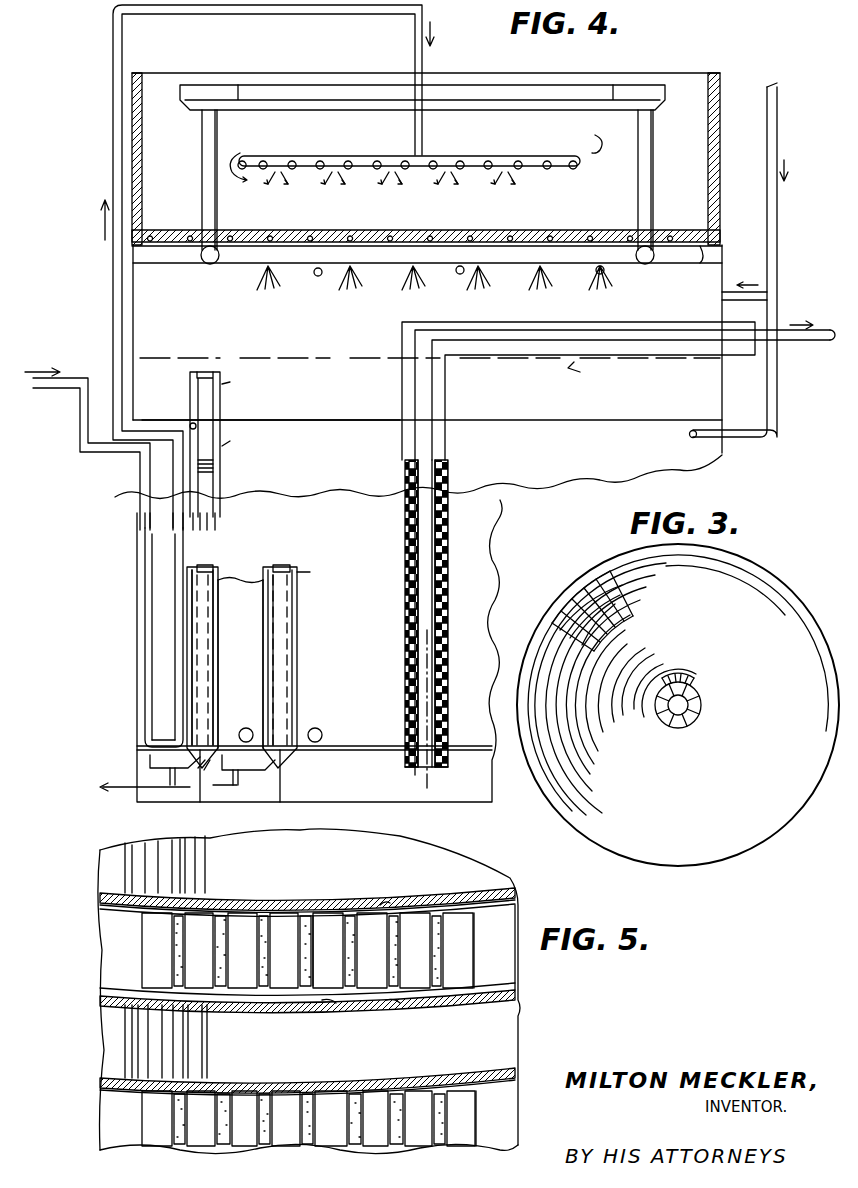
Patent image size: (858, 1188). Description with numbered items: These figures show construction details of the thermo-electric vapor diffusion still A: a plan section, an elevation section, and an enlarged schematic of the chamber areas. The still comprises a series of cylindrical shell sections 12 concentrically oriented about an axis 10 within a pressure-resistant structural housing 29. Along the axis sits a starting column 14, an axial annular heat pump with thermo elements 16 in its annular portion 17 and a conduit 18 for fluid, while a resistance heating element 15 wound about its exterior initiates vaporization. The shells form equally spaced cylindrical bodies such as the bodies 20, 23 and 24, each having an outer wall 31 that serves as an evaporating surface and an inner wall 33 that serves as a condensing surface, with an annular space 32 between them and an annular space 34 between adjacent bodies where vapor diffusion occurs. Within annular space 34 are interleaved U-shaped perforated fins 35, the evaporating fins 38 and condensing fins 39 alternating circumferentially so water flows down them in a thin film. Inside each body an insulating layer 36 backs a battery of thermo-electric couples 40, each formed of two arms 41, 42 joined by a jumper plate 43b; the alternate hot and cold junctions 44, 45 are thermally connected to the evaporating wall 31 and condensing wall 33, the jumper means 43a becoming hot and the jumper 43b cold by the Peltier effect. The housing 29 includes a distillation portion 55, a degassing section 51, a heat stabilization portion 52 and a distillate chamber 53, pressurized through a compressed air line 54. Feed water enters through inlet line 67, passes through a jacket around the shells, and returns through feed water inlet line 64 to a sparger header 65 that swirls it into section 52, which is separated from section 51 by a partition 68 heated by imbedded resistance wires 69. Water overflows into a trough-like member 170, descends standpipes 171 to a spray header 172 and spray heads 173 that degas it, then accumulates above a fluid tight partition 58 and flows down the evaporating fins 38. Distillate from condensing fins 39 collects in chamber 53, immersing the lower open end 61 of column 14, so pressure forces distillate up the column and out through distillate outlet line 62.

In FIG. 4, the axis 10 is at (430, 784).
In FIG. 3, the axis 10 is at (672, 727).
In FIG. 4, the cylindrical shell sections 12 is at (226, 455).
In FIG. 5, the cylindrical shell sections 12 is at (526, 970).
In FIG. 4, the starting column 14 is at (458, 669).
In FIG. 3, the starting column 14 is at (714, 705).
In FIG. 4, the resistance heating element 15 is at (442, 552).
In FIG. 4, the thermo elements 16 is at (448, 599).
In FIG. 4, the annular portion 17 is at (440, 722).
In FIG. 4, the conduit 18 is at (430, 695).
In FIG. 3, the cylindrical body 20 is at (686, 675).
In FIG. 3, the cylindrical body 23 is at (618, 605).
In FIG. 3, the cylindrical body 24 is at (612, 562).
In FIG. 4, the structural housing 29 is at (137, 718).
In FIG. 4, the outer wall 31 is at (218, 672).
In FIG. 5, the outer wall 31 is at (518, 1010).
In FIG. 3, the annular space 32 is at (697, 567).
In FIG. 5, the annular space 32 is at (330, 957).
In FIG. 4, the inner wall 33 is at (265, 710).
In FIG. 5, the inner wall 33 is at (520, 898).
In FIG. 3, the annular space 34 is at (745, 571).
In FIG. 5, the annular space 34 is at (312, 1073).
In FIG. 4, the interleaved fins 35 is at (280, 648).
In FIG. 5, the interleaved fins 35 is at (216, 865).
In FIG. 5, the insulating layer 36 is at (512, 918).
In FIG. 4, the evaporating fins 38 is at (215, 692).
In FIG. 4, the condensing fins 39 is at (192, 622).
In FIG. 5, the thermo-electric couples 40 is at (464, 967).
In FIG. 5, the arm 41 is at (414, 979).
In FIG. 5, the arm 42 is at (352, 968).
In FIG. 5, the jumper means 43a is at (327, 1000).
In FIG. 5, the jumper plate 43b is at (385, 903).
In FIG. 5, the hot thermocouple junction 44 is at (393, 1000).
In FIG. 5, the cold thermocouple junction 45 is at (400, 905).
In FIG. 4, the degassing section 51 is at (325, 406).
In FIG. 4, the heat stabilization portion 52 is at (170, 170).
In FIG. 4, the distillate chamber 53 is at (360, 784).
In FIG. 4, the compressed air line 54 is at (778, 412).
In FIG. 4, the distillation portion 55 is at (327, 476).
In FIG. 4, the fluid tight partition 58 is at (560, 416).
In FIG. 4, the lower open end 61 is at (412, 772).
In FIG. 4, the distillate outlet line 62 is at (822, 325).
In FIG. 4, the feed water inlet line 64 is at (112, 96).
In FIG. 4, the sparger header 65 is at (546, 152).
In FIG. 4, the inlet line 67 is at (72, 380).
In FIG. 4, the partition 68 is at (705, 256).
In FIG. 4, the electrical resistance wires 69 is at (660, 250).
In FIG. 4, the trough-like member 170 is at (655, 78).
In FIG. 4, the standpipes 171 is at (218, 135).
In FIG. 4, the spray header 172 is at (542, 270).
In FIG. 4, the spray heads 173 is at (270, 266).
In FIG. 4, the thermo-electric vapor diffusion still A is at (130, 691).
In FIG. 3, the thermo-electric vapor diffusion still A is at (573, 838).